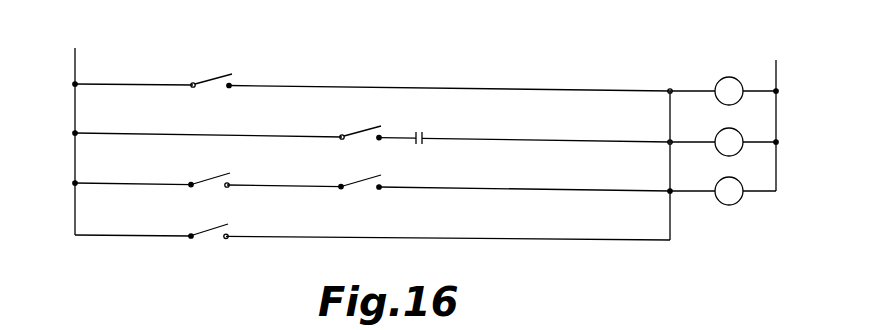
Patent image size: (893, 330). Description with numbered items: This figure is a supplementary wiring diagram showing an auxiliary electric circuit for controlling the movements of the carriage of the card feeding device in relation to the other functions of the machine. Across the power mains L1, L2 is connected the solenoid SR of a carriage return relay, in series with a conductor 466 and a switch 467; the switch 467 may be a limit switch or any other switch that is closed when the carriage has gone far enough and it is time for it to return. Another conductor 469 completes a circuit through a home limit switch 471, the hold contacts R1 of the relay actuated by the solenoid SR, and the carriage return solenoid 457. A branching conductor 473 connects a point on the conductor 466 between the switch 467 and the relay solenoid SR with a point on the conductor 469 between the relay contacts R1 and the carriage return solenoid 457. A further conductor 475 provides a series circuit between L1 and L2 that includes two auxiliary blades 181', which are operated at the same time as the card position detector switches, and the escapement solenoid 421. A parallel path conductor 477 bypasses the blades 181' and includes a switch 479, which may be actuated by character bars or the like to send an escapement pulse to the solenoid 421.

The power main L1 is at (75, 48).
The power main L2 is at (776, 60).
The conductor 466 is at (384, 87).
The switch 467 is at (211, 76).
The conductor 469 is at (166, 135).
The home limit switch 471 is at (361, 130).
The hold contacts R1 is at (424, 134).
The conductor 475 is at (136, 183).
The auxiliary blades 181' is at (273, 171).
The parallel path conductor 477 is at (142, 236).
The switch 479 is at (214, 230).
The branching conductor 473 is at (670, 117).
The solenoid of carriage return relay SR is at (728, 79).
The carriage return solenoid 457 is at (717, 150).
The escapement solenoid 421 is at (730, 206).